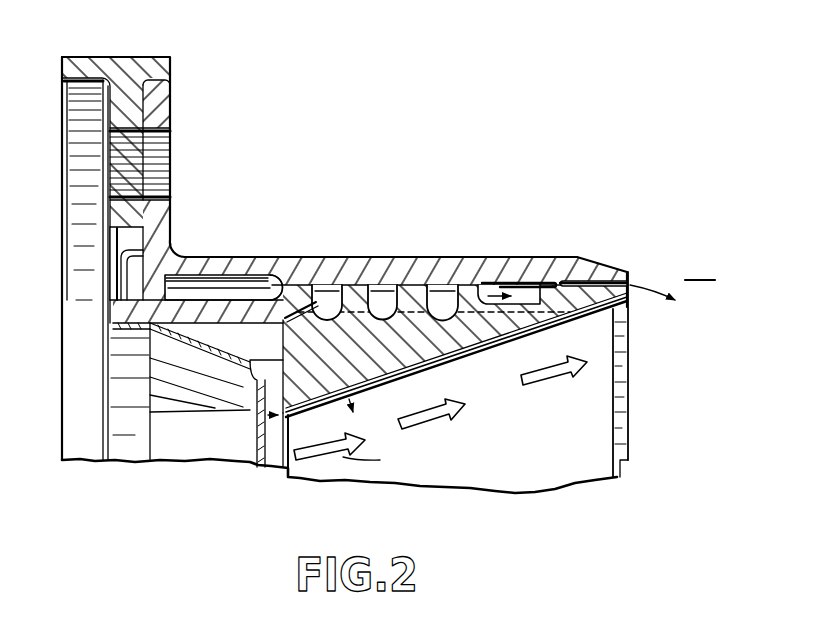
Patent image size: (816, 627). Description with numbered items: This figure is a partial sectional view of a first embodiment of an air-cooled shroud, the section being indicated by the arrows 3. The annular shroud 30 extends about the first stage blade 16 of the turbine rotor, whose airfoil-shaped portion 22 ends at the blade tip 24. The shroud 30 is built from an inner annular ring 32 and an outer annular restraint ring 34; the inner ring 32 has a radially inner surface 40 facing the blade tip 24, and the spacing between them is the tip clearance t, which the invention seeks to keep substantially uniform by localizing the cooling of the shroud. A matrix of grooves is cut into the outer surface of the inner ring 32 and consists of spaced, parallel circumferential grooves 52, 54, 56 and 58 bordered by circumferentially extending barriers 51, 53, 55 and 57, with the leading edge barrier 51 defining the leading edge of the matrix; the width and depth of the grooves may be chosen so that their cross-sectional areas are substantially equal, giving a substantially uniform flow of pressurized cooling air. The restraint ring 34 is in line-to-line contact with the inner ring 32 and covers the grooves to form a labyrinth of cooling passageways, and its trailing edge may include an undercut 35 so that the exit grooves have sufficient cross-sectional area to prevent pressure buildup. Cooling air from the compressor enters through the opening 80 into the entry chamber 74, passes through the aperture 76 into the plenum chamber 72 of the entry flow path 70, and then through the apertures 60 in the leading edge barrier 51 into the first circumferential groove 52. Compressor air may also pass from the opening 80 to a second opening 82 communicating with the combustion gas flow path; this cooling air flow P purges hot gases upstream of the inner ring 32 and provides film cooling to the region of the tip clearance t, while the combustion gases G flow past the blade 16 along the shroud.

The section line 3- 3 is at (262, 266).
The first stage blade 16 is at (576, 492).
The airfoil-shaped portion 22 is at (603, 410).
The blade tip 24 is at (527, 324).
The annular shroud 30 is at (395, 270).
The inner annular ring 32 is at (480, 352).
The outer annular restraint ring 34 is at (327, 298).
The undercut 35 is at (584, 284).
The radially inner surface 40 is at (503, 342).
The leading edge barrier 51 is at (297, 282).
The first circumferential groove 52 is at (331, 288).
The barrier 53 is at (384, 297).
The circumferential groove 54 is at (382, 296).
The barrier 55 is at (442, 252).
The circumferential groove 56 is at (480, 292).
The barrier 57 is at (507, 283).
The circumferential groove 58 is at (512, 293).
The aperture 60 is at (292, 282).
The entry flow path 70 is at (178, 276).
The plenum chamber 72 is at (222, 336).
The entry chamber 74 is at (198, 290).
The aperture 76 is at (258, 276).
The opening 80 is at (140, 260).
The second opening 82 is at (110, 323).
The cooling air flow P is at (118, 336).
The combustion gases G is at (425, 427).
The tip clearance t is at (352, 404).